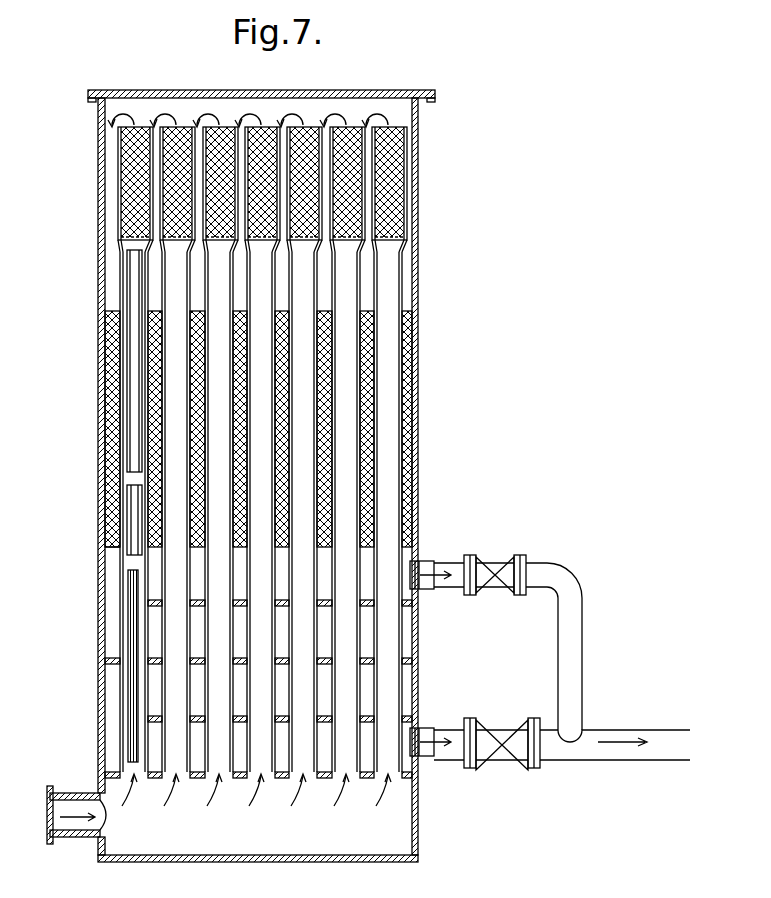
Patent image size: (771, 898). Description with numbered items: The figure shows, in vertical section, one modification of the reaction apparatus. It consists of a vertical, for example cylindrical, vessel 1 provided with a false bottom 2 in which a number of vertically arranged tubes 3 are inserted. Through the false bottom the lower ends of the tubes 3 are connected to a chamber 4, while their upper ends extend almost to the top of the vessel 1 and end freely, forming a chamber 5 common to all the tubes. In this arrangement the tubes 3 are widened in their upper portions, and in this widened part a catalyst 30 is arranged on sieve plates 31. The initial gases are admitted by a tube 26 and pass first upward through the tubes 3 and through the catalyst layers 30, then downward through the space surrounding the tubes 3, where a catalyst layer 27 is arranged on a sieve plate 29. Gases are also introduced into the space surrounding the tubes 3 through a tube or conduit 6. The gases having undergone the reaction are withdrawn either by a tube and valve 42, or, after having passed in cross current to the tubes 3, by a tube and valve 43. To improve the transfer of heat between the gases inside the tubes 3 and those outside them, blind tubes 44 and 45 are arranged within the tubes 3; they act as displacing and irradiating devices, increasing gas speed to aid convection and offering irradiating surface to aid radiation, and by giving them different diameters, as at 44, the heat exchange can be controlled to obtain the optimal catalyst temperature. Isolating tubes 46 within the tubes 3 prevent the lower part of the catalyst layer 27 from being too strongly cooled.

The vessel 1 is at (104, 585).
The false bottom 2 is at (407, 779).
The tubes 3 is at (115, 400).
The chamber 4 is at (256, 808).
The chamber 5 is at (305, 124).
The tube or conduit 6 is at (424, 728).
The tube 26 is at (68, 830).
The catalyst layer 27 is at (112, 347).
The sieve plate 29 is at (118, 549).
The catalyst 30 is at (398, 190).
The sieve plates 31 is at (386, 240).
The tube and valve 42 is at (495, 566).
The tube and valve 43 is at (502, 739).
The blind tube 44 is at (132, 279).
The blind tube 45 is at (132, 665).
The isolating tubes 46 is at (126, 500).